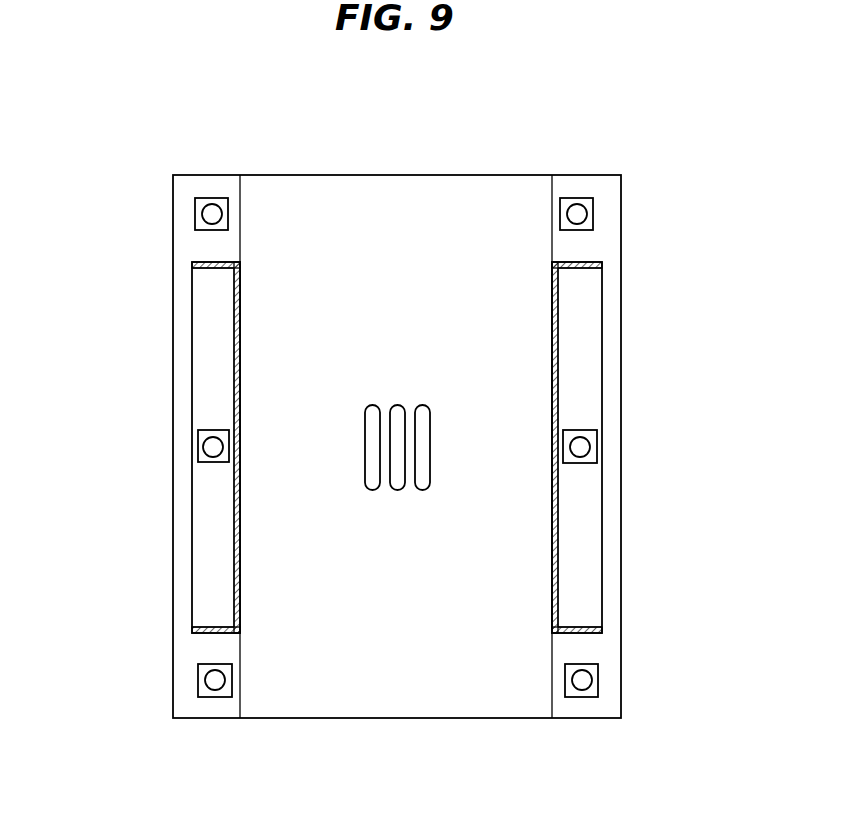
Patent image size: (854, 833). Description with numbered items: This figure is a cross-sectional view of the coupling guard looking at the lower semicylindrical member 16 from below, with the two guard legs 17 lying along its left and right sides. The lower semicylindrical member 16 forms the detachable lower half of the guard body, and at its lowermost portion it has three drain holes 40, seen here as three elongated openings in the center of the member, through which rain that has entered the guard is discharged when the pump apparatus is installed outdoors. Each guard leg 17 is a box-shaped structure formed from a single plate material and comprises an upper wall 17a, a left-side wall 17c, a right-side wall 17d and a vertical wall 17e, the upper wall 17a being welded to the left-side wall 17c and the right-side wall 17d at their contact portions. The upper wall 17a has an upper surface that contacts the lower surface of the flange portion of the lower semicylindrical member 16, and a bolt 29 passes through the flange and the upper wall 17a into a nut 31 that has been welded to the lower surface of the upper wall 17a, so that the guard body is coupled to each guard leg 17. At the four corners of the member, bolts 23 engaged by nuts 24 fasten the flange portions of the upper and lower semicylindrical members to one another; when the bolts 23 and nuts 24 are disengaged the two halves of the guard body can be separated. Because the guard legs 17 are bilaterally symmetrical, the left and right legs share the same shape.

The lower semicylindrical member 16 is at (472, 205).
The guard leg 17 is at (377, 445).
The upper wall 17a is at (205, 565).
The left-side wall 17c is at (190, 265).
The right-side wall 17d is at (212, 627).
The vertical wall 17e is at (236, 380).
The bolt 23 is at (214, 203).
The nut 24 is at (195, 213).
The bolt 29 is at (208, 457).
The nut 31 is at (198, 447).
The drain hole 40 is at (397, 405).